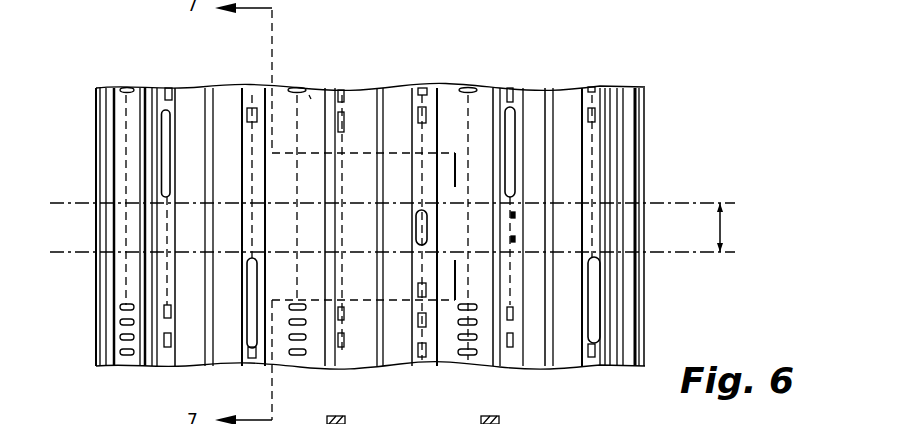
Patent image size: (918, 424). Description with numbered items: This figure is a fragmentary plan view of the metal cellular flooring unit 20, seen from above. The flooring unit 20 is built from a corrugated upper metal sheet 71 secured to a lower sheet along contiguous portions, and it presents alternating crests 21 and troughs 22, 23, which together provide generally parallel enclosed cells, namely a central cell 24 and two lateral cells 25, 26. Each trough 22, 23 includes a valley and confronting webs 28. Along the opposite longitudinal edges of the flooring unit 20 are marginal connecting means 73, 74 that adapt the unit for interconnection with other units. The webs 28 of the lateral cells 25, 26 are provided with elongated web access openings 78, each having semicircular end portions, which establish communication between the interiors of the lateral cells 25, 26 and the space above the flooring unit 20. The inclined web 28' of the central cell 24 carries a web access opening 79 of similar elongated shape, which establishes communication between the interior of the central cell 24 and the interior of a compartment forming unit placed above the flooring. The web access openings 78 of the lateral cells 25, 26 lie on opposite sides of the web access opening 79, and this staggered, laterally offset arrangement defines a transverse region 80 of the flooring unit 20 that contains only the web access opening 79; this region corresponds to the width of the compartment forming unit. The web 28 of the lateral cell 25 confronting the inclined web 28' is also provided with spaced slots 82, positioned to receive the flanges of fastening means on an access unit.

The metal cellular flooring unit 20 is at (665, 66).
The crests 21 is at (192, 96).
The trough 22 is at (455, 110).
The trough 23 is at (305, 95).
The central cell 24 is at (393, 368).
The lateral cell 25 is at (564, 368).
The lateral cell 26 is at (198, 368).
The webs 28 is at (322, 223).
The inclined web 28' is at (437, 241).
The corrugated upper metal sheet 71 is at (566, 90).
The marginal connecting means 73 is at (645, 336).
The marginal connecting means 74 is at (96, 317).
The web access opening 78 is at (163, 105).
The web access opening 79 is at (425, 232).
The transverse region 80 is at (722, 228).
The spaced slots 82 is at (512, 217).